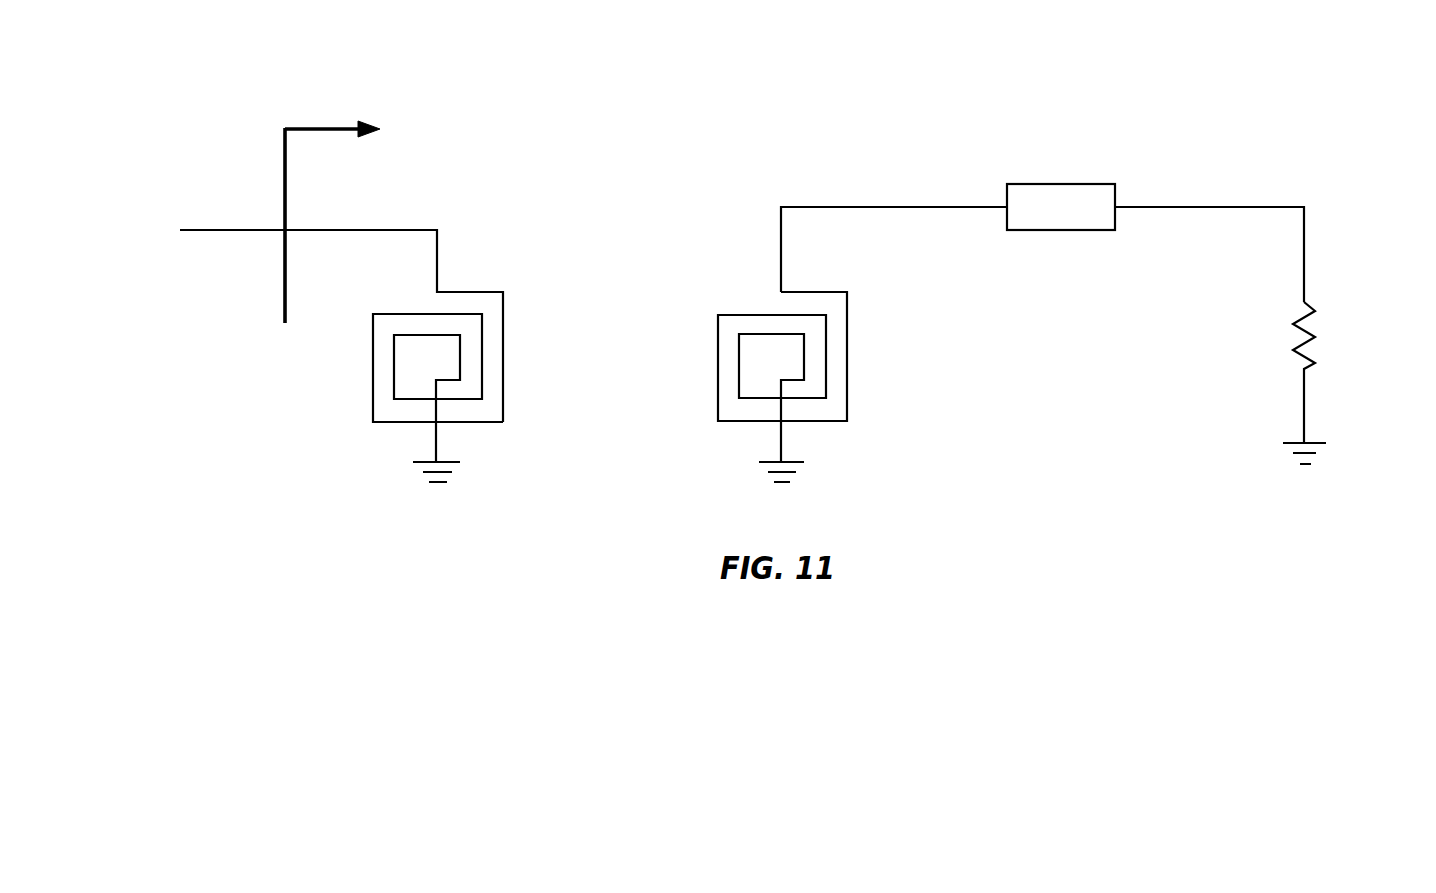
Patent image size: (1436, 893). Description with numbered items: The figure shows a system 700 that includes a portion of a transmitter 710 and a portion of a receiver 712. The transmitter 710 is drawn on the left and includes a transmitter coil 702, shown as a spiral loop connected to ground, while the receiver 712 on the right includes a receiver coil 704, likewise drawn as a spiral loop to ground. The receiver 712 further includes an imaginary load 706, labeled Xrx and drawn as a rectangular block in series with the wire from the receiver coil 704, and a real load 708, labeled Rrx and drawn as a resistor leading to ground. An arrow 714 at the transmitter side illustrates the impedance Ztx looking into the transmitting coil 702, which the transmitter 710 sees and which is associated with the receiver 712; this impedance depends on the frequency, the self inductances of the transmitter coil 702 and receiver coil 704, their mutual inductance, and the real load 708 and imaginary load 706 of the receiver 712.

The system 700 is at (740, 87).
The transmitter coil 702 is at (373, 382).
The receiver coil 704 is at (718, 368).
The imaginary load 706 is at (1080, 184).
The real load 708 is at (1316, 323).
The transmitter 710 is at (457, 141).
The receiver 712 is at (1287, 144).
The arrow 714 is at (283, 185).